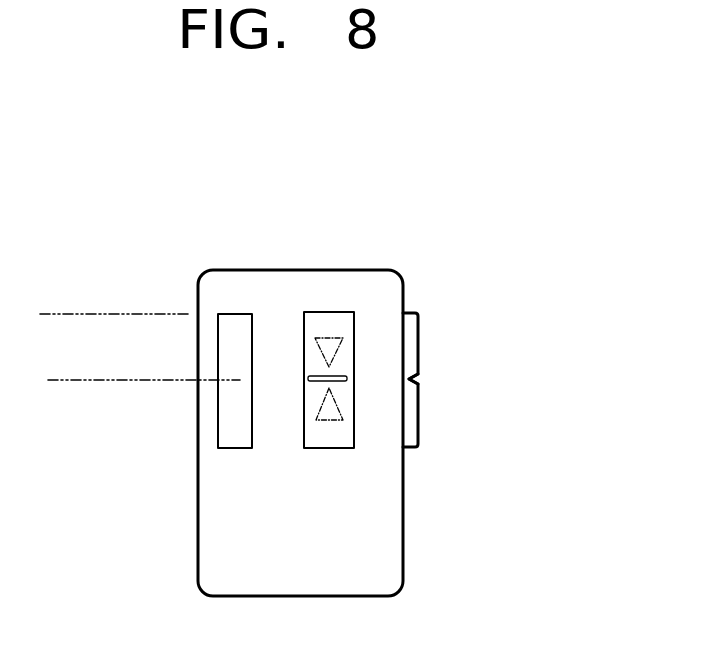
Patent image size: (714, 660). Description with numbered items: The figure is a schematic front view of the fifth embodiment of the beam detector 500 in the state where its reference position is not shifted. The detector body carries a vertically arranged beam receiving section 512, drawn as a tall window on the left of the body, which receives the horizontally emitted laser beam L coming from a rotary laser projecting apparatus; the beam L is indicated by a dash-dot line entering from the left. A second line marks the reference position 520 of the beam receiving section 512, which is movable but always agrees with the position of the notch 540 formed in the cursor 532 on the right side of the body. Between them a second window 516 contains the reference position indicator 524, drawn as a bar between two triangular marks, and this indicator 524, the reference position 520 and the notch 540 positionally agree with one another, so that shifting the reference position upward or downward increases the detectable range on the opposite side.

The beam detector 500 is at (253, 236).
The beam receiving section 512 is at (237, 331).
The second window 516 is at (337, 316).
The reference position indicator 524 is at (337, 382).
The cursor 532 is at (415, 322).
The notch 540 is at (416, 381).
The laser beam L is at (70, 314).
The reference position 520 is at (110, 382).